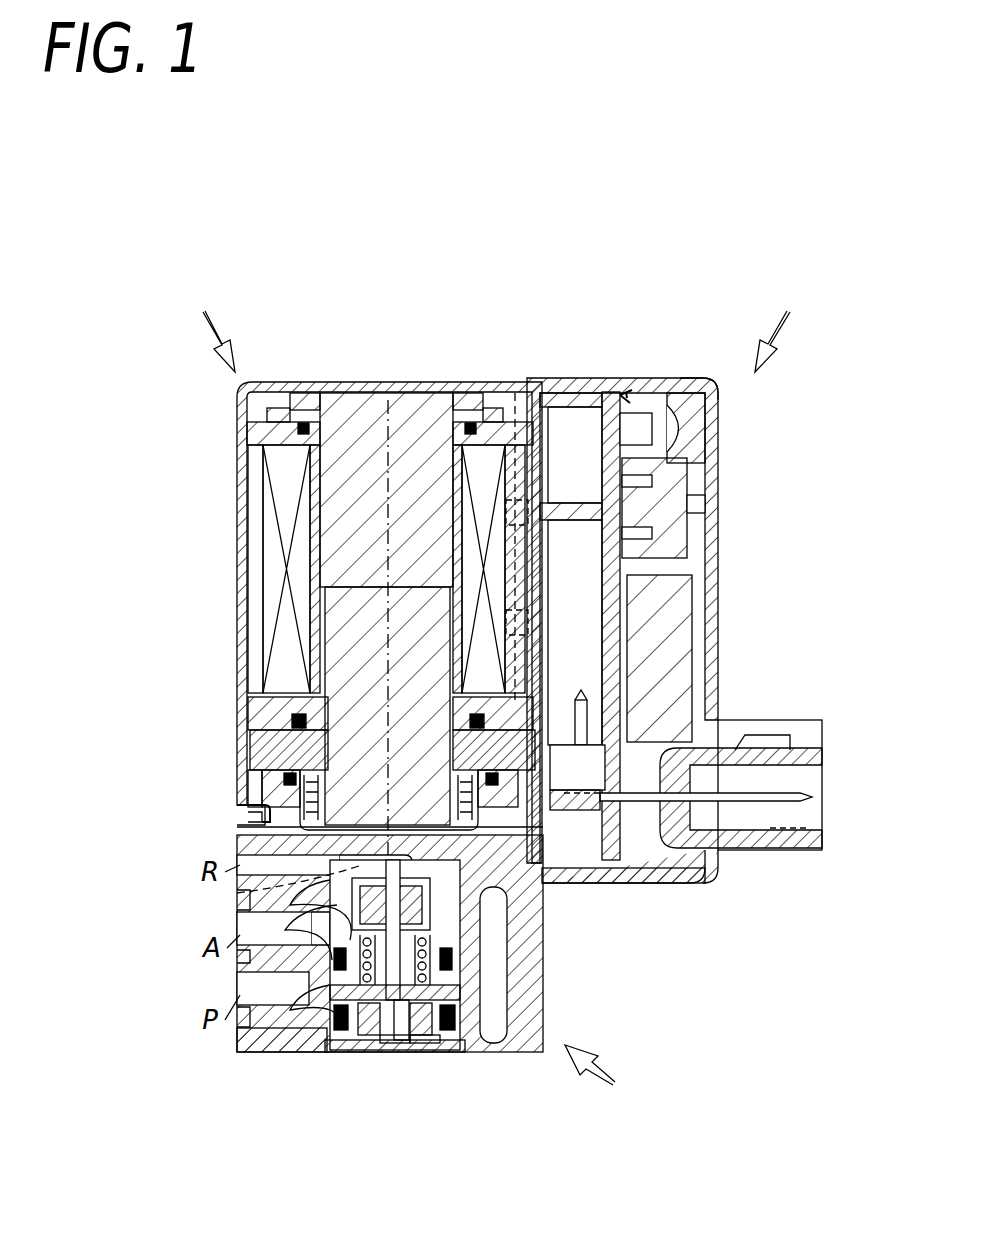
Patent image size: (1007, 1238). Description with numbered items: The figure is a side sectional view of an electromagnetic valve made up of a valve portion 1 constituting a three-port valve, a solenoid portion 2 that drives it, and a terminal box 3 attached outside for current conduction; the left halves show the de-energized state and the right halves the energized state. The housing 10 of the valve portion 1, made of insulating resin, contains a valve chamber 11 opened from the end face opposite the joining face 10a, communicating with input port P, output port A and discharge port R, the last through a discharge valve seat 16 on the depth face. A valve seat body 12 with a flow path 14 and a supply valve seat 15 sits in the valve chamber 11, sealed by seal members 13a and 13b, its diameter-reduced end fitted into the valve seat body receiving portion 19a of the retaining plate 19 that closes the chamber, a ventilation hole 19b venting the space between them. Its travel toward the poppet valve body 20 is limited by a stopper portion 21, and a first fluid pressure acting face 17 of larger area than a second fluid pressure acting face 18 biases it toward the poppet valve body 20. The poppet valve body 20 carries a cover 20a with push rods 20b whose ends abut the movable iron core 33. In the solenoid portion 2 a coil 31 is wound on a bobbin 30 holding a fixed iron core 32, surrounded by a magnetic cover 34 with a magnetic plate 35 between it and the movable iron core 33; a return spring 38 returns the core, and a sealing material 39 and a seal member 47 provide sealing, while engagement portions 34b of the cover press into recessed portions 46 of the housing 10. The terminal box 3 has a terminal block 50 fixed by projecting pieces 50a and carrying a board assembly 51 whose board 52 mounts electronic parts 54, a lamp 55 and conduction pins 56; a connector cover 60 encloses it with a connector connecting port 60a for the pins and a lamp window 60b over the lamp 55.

The valve portion 1 is at (601, 1072).
The solenoid portion 2 is at (208, 324).
The terminal box 3 is at (781, 324).
The housing 10 is at (525, 1052).
The joining face 10a is at (250, 760).
The valve chamber 11 is at (262, 1052).
The valve seat body 12 is at (345, 1050).
The seal member 13a is at (450, 980).
The seal member 13b is at (420, 1050).
The flow path 14 is at (385, 1050).
The supply valve seat 15 is at (410, 930).
The discharge valve seat 16 is at (400, 900).
The first fluid pressure acting face 17 is at (310, 1050).
The second fluid pressure acting face 18 is at (400, 1052).
The retaining plate 19 is at (445, 1052).
The valve seat body receiving portion 19a is at (470, 1050).
The ventilation hole 19b is at (335, 1052).
The poppet valve body 20 is at (340, 960).
The cover 20a is at (340, 905).
The push rods 20b is at (237, 893).
The stopper portion 21 is at (430, 960).
The bobbin 30 is at (300, 483).
The coil 31 is at (270, 538).
The fixed iron core 32 is at (410, 393).
The movable iron core 33 is at (360, 650).
The magnetic cover 34 is at (330, 383).
The engagement portions 34b is at (250, 815).
The magnetic plate 35 is at (260, 720).
The return spring 38 is at (478, 780).
The sealing material 39 is at (298, 428).
The recessed portions 46 is at (262, 818).
The seal member 47 is at (285, 782).
The terminal block 50 is at (578, 393).
The projecting pieces 50a is at (520, 393).
The board assembly 51 is at (628, 390).
The board 52 is at (612, 393).
The electronic parts 54 is at (680, 510).
The lamp 55 is at (645, 430).
The conduction pins 56 is at (780, 802).
The connector cover 60 is at (712, 580).
The connector connecting port 60a is at (800, 780).
The lamp window 60b is at (700, 385).